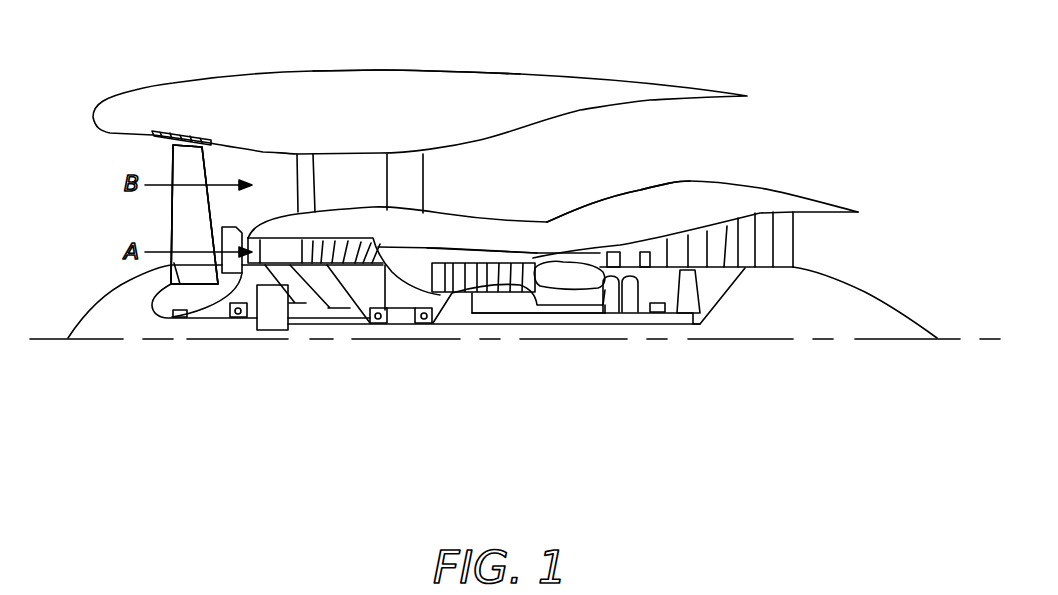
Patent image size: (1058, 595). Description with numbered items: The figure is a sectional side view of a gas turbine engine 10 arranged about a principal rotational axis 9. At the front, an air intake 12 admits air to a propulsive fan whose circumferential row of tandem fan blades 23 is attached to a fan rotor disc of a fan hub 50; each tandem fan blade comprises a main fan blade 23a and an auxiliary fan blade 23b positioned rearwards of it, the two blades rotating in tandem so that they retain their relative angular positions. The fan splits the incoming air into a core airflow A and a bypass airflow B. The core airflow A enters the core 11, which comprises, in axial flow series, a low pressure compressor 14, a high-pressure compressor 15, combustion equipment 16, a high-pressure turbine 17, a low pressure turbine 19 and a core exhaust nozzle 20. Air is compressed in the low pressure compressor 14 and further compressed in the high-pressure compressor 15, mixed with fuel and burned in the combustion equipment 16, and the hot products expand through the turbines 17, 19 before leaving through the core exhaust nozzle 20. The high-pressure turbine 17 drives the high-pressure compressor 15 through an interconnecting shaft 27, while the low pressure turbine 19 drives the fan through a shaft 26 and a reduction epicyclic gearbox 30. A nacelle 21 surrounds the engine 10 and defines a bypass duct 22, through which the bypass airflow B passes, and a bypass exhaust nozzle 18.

The principal rotational axis 9 is at (650, 342).
The gas turbine engine 10 is at (172, 85).
The core 11 is at (537, 238).
The air intake 12 is at (125, 163).
The low pressure compressor 14 is at (342, 242).
The high-pressure compressor 15 is at (488, 273).
The combustion equipment 16 is at (562, 277).
The high-pressure turbine 17 is at (625, 257).
The bypass exhaust nozzle 18 is at (737, 135).
The low pressure turbine 19 is at (763, 230).
The core exhaust nozzle 20 is at (827, 240).
The nacelle 21 is at (400, 82).
The bypass duct 22 is at (690, 151).
The tandem fan blades 23 is at (83, 193).
The main fan blade 23a is at (175, 207).
The auxiliary fan blade 23b is at (227, 238).
The shaft 26 is at (482, 327).
The interconnecting shaft 27 is at (523, 313).
The epicyclic gearbox 30 is at (270, 320).
The fan hub 50 is at (157, 265).